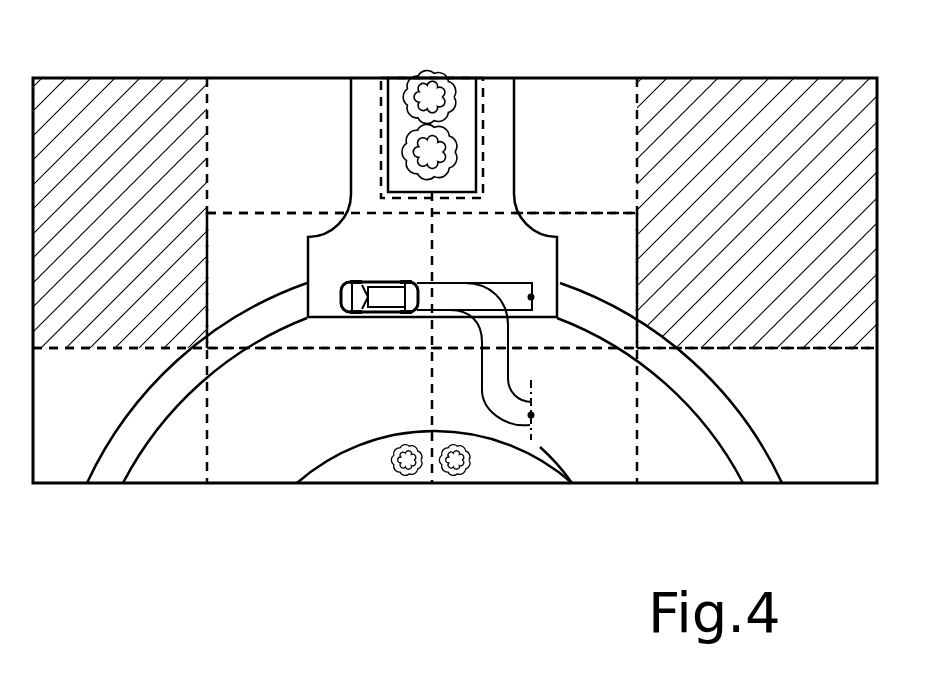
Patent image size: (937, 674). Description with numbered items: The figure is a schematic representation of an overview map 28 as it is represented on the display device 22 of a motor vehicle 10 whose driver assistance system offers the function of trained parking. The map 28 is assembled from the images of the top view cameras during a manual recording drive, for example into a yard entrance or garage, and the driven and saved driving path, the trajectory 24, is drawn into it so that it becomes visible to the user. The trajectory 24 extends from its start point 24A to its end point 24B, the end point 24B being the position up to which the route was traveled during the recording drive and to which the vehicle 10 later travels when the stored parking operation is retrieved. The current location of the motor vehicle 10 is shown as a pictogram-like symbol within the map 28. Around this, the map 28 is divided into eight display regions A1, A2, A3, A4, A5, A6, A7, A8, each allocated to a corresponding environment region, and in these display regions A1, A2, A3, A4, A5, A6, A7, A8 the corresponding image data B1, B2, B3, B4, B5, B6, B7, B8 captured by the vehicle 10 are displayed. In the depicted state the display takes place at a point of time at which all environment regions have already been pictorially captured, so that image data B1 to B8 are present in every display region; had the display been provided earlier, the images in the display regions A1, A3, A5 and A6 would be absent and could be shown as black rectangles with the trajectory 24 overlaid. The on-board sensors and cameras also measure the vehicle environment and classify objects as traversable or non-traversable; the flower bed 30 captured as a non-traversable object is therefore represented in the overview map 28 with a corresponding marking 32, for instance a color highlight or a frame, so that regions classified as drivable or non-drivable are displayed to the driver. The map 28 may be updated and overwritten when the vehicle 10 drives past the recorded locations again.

The motor vehicle 10 is at (398, 282).
The display device 22 is at (683, 72).
The trajectory 24 is at (491, 408).
The start point 24A is at (531, 415).
The end point 24B is at (531, 297).
The overview map 28 is at (468, 216).
The flower bed 30 is at (403, 106).
The marking 32 is at (382, 107).
The display region A1 is at (283, 113).
The display region A2 is at (555, 113).
The display region A3 is at (218, 240).
The display region A4 is at (622, 228).
The display region A5 is at (95, 373).
The display region A6 is at (332, 462).
The display region A7 is at (593, 460).
The display region A8 is at (757, 390).
The image data B1 is at (335, 202).
The image data B2 is at (580, 202).
The image data B3 is at (265, 296).
The image data B4 is at (615, 271).
The image data B5 is at (95, 428).
The image data B6 is at (332, 418).
The image data B7 is at (605, 398).
The image data B8 is at (805, 435).